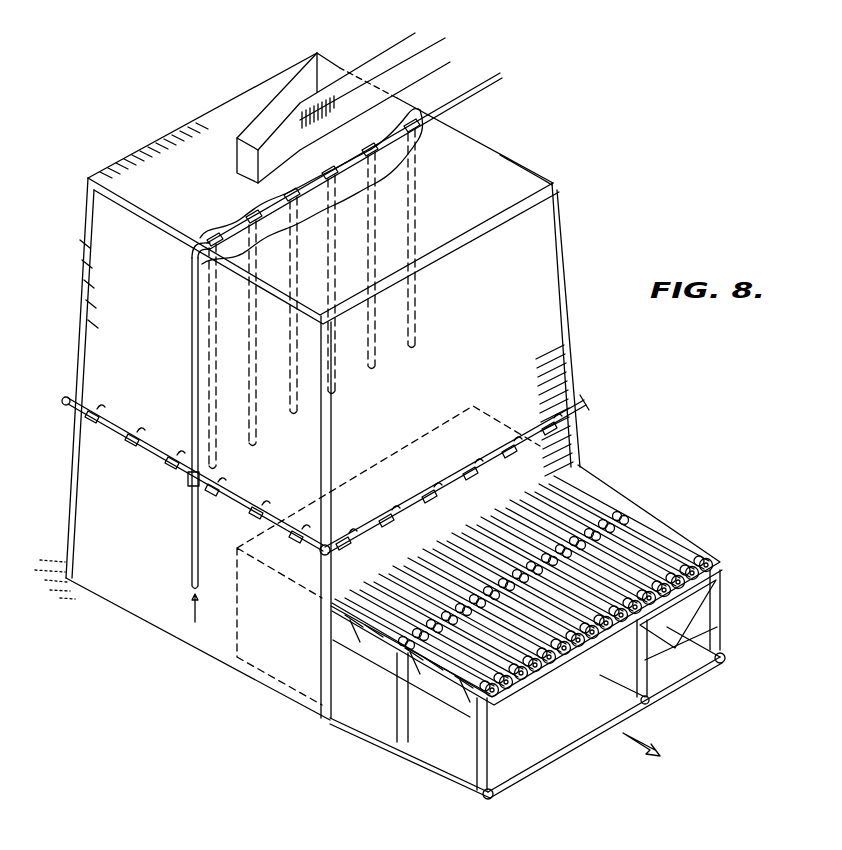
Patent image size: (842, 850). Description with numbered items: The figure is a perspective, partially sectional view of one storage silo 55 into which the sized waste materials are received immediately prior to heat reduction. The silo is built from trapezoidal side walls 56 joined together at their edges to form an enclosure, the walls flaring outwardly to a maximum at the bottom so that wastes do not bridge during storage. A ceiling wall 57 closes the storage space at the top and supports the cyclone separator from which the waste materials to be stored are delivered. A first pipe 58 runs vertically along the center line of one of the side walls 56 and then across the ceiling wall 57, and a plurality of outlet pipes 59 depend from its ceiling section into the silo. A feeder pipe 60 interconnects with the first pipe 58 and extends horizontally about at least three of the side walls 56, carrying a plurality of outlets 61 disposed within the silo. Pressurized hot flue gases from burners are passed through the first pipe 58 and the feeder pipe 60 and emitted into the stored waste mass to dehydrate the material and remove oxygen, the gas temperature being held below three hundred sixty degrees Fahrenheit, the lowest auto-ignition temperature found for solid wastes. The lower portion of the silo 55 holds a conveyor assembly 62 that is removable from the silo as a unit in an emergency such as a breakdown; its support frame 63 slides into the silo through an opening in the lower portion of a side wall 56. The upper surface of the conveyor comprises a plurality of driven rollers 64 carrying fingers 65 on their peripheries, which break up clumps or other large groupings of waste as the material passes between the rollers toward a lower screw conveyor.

The storage silo 55 is at (506, 145).
The trapezoidal side walls 56 is at (102, 212).
The ceiling wall 57 is at (207, 112).
The first pipe 58 is at (460, 102).
The outlet pipes 59 is at (373, 332).
The feeder pipe 60 is at (230, 497).
The outlets 61 is at (143, 437).
The conveyor assembly 62 is at (413, 767).
The support frame 63 is at (480, 752).
The driven rollers 64 is at (630, 533).
The fingers 65 is at (380, 620).